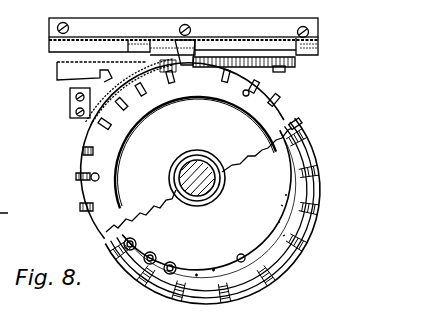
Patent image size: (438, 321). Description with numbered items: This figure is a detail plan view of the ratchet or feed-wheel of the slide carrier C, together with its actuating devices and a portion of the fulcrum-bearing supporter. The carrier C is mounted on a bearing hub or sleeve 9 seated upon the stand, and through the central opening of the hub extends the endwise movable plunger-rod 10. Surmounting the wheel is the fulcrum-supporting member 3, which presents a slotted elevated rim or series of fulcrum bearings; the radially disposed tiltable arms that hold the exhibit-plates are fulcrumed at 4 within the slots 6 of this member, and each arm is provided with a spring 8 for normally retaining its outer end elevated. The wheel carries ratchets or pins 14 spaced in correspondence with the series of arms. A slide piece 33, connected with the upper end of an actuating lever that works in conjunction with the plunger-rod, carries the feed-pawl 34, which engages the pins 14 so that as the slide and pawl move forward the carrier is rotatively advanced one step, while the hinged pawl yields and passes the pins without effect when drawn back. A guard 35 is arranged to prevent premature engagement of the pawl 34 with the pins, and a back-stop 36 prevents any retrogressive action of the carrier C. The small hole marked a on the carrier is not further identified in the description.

The fulcrum-supporting member 3 is at (318, 200).
The fulcrum 4 is at (260, 275).
The slots 6 is at (286, 270).
The spring 8 is at (136, 244).
The bearing hub or sleeve 9 is at (197, 167).
The plunger-rod 10 is at (216, 183).
The pins 14 is at (83, 151).
The slide piece 33 is at (278, 47).
The feed-pawl 34 is at (188, 60).
The guard 35 is at (100, 75).
The back-stop 36 is at (73, 95).
The carrier C is at (323, 163).
The hole a is at (114, 177).